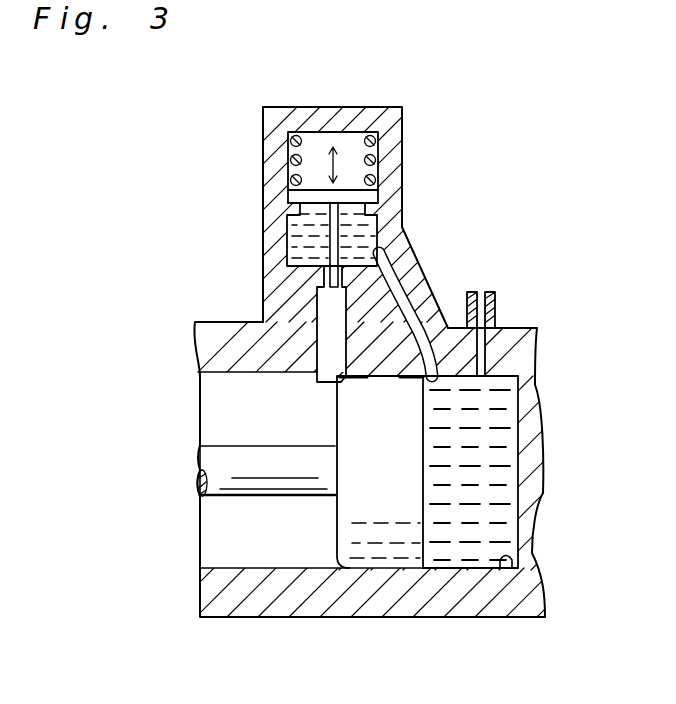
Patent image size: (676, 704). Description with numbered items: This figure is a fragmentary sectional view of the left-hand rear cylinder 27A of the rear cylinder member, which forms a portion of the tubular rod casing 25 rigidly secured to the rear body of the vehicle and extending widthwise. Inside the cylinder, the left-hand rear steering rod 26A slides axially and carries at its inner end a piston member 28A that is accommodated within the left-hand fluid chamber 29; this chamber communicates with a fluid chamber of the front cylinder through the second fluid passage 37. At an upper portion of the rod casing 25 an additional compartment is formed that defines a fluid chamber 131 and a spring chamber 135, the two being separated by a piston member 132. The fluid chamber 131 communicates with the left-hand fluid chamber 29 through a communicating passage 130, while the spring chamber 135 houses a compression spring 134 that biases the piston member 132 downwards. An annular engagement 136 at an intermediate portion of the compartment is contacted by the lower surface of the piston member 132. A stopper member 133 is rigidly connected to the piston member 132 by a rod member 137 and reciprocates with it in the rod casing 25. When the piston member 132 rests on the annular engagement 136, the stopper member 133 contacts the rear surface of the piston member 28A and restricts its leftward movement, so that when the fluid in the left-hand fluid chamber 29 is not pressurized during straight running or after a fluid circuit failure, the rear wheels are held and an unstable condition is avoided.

The rod casing 25 is at (523, 342).
The left-hand rear steering rod 26A is at (268, 478).
The left-hand rear cylinder 27A is at (505, 560).
The piston member 28A is at (382, 542).
The left-hand fluid chamber 29 is at (472, 548).
The second fluid passage 37 is at (481, 293).
The communicating passage 130 is at (400, 300).
The fluid chamber 131 is at (362, 240).
The piston member 132 is at (384, 199).
The stopper member 133 is at (330, 327).
The compression spring 134 is at (405, 125).
The spring chamber 135 is at (312, 140).
The annular engagement 136 is at (293, 210).
The rod member 137 is at (330, 247).